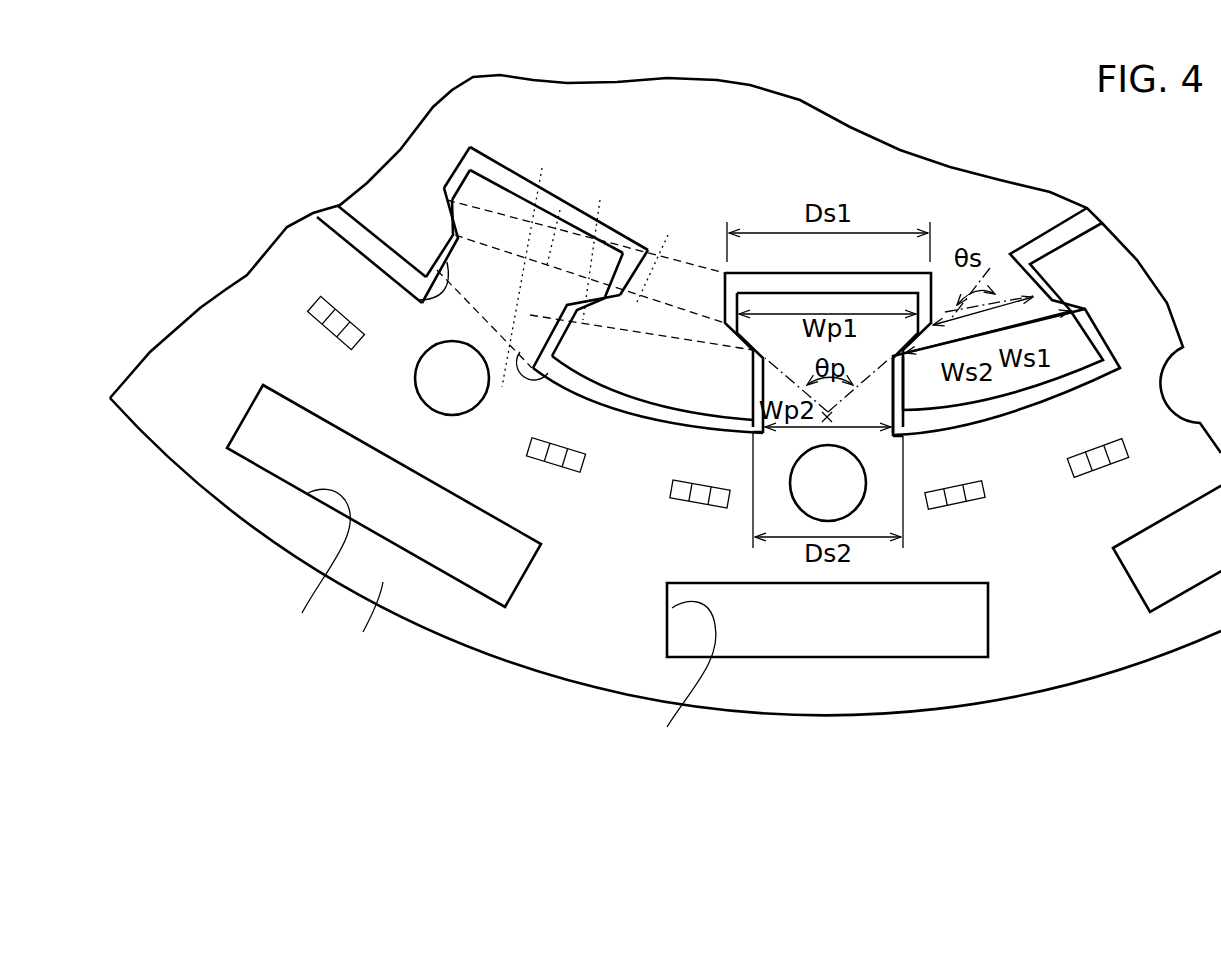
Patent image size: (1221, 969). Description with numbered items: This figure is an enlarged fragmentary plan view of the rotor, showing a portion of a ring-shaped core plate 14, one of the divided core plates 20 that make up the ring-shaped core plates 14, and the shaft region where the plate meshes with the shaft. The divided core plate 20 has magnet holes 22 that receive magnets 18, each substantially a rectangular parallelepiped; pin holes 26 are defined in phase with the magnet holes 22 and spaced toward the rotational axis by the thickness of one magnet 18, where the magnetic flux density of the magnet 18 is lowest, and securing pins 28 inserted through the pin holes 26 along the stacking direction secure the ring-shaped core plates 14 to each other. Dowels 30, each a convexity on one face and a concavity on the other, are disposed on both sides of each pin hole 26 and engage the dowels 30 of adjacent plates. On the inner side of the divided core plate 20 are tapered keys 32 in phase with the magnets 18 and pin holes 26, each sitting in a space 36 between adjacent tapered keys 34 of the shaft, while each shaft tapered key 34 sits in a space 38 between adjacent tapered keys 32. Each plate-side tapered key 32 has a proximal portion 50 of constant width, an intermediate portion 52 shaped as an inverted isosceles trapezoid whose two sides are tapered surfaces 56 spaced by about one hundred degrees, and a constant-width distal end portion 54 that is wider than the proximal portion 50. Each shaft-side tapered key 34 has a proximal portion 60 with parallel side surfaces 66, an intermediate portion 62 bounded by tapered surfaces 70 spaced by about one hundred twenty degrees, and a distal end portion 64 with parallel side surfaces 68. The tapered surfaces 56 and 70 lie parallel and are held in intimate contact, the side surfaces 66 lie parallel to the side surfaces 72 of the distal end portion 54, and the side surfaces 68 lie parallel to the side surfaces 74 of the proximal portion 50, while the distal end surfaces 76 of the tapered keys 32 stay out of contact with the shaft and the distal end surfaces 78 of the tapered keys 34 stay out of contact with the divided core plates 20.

The ring-shaped core plate 14 is at (897, 715).
The magnet 18 is at (490, 545).
The divided core plate 20 is at (364, 623).
The magnet hole 22 is at (504, 624).
The pin hole 26 is at (428, 372).
The securing pin 28 is at (452, 398).
The dowel 30 is at (342, 333).
The tapered key 32 is at (463, 193).
The tapered key 34 is at (572, 343).
The space 36 is at (495, 172).
The space 38 is at (377, 257).
The proximal portion 50 is at (508, 405).
The intermediate portion 52 is at (448, 228).
The distal end portion 54 is at (528, 263).
The tapered surface 56 is at (590, 305).
The proximal portion 60 is at (690, 293).
The intermediate portion 62 is at (658, 256).
The distal end portion 64 is at (601, 247).
The side surface 66 is at (728, 292).
The side surface 68 is at (433, 273).
The tapered surface 70 is at (745, 313).
The side surface 72 is at (452, 172).
The side surface 74 is at (422, 297).
The distal end surface 76 is at (557, 215).
The distal end surface 78 is at (683, 402).